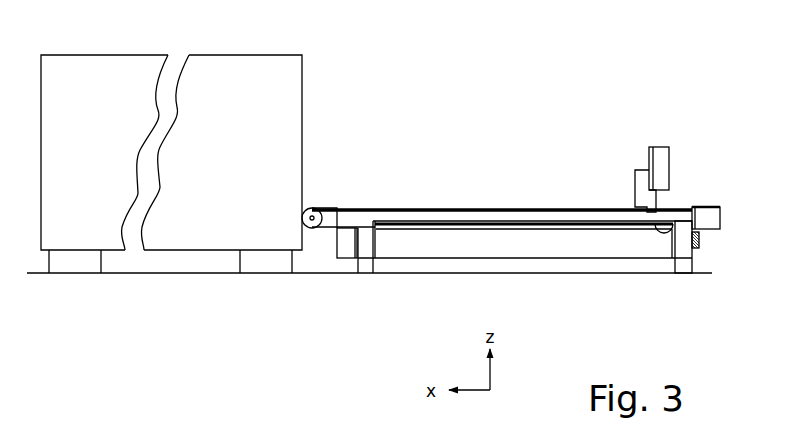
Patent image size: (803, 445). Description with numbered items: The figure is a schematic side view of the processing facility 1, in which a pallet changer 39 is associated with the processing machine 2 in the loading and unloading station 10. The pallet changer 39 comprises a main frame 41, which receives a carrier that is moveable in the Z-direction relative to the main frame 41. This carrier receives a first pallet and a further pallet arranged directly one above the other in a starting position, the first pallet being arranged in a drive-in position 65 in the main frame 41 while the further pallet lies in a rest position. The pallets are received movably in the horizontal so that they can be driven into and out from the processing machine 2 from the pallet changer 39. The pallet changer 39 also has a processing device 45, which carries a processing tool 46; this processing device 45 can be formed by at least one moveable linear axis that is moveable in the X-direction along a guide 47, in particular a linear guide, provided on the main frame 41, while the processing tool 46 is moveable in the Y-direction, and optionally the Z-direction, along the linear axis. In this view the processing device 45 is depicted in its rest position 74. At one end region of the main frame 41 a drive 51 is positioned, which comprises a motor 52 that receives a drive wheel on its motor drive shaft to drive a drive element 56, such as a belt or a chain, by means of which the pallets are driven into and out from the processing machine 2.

The processing facility 1 is at (388, 77).
The processing machine 2 is at (226, 45).
The loading and unloading station 10 is at (523, 172).
The drive-in position 65 is at (393, 197).
The drive element 56 is at (327, 204).
The pallet changer 39 is at (708, 256).
The guide 47 is at (651, 212).
The main frame 41 is at (681, 281).
The processing device 45 is at (658, 131).
The rest position 74 is at (672, 140).
The processing tool 46 is at (675, 163).
The drive 51 is at (702, 201).
The motor 52 is at (707, 219).